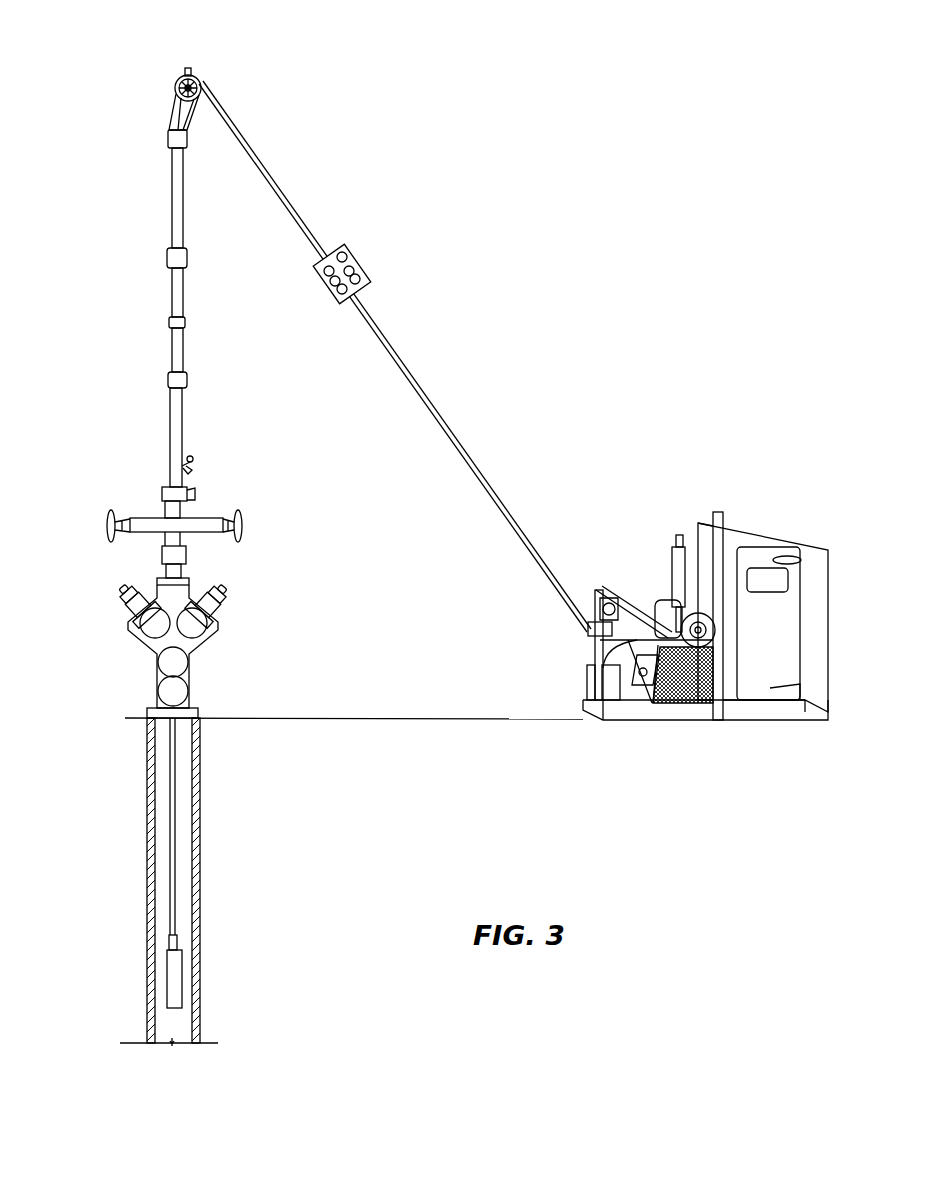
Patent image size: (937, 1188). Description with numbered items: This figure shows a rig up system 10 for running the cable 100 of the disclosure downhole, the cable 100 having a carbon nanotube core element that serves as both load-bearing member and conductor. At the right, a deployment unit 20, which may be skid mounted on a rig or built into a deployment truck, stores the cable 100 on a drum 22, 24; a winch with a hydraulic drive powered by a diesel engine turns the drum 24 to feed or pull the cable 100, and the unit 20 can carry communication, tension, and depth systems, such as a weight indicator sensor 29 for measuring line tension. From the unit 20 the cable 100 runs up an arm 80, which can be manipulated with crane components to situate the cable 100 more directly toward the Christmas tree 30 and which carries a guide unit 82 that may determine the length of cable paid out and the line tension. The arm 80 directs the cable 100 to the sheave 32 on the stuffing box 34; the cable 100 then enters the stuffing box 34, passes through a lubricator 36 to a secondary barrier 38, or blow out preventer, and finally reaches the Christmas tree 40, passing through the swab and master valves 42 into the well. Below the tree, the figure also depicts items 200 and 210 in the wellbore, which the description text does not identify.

The rig up system 10 is at (560, 226).
The deployment unit 20 is at (670, 470).
The drum 22 is at (795, 545).
The drum 24 is at (672, 598).
The weight indicator sensor 29 is at (228, 598).
The Christmas tree 30 is at (72, 66).
The sheave 32 is at (172, 110).
The stuffing box 34 is at (172, 217).
The lubricator 36 is at (172, 302).
The secondary barrier 38 is at (138, 518).
The Christmas tree 40 is at (135, 638).
The swab and master valves 42 is at (190, 697).
The arm 80 is at (452, 417).
The guide unit 82 is at (358, 255).
The cable 100 is at (283, 188).
The downhole tool 200 is at (200, 970).
The cable head 210 is at (200, 938).